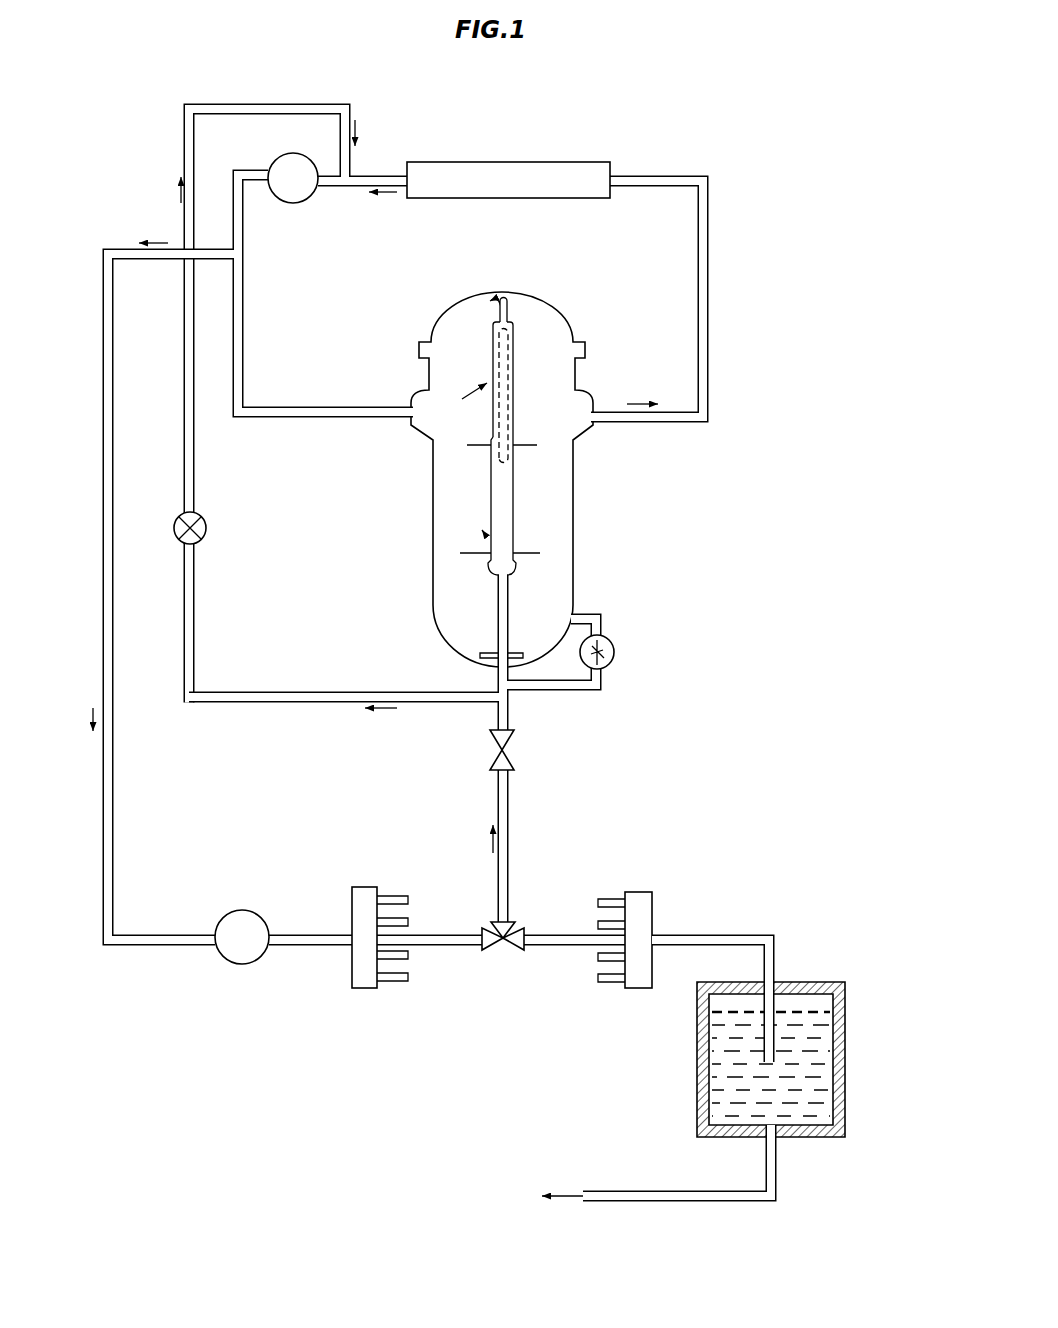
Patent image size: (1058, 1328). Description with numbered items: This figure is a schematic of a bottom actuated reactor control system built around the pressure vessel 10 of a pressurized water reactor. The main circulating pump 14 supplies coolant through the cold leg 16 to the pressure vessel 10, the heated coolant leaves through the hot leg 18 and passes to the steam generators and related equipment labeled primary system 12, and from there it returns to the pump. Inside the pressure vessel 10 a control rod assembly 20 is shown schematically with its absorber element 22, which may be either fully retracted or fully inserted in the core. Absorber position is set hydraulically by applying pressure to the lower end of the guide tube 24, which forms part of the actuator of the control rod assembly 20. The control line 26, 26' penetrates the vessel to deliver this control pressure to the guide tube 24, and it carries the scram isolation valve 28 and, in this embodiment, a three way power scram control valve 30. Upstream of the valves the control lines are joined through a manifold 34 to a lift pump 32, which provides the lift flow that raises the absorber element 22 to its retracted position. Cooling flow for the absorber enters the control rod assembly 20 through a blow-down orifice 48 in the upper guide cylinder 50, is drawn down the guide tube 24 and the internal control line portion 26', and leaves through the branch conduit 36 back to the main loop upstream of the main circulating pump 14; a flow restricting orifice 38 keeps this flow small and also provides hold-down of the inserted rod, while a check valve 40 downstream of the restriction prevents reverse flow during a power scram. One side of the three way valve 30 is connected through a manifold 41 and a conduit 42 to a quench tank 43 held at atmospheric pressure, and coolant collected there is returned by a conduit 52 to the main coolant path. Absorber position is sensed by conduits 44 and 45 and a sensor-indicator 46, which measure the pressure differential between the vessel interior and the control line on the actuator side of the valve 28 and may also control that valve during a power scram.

The pressure vessel 10 is at (577, 515).
The primary system 12 is at (548, 157).
The main circulating pump 14 is at (290, 204).
The cold leg 16 is at (290, 410).
The hot leg 18 is at (708, 293).
The control rod assembly 20 is at (460, 400).
The absorber element 22 is at (503, 381).
The guide tube 24 is at (513, 500).
The control line 26 is at (523, 846).
The internal control line portion 26' is at (530, 652).
The scram isolation valve 28 is at (511, 752).
The three way power scram control valve 30 is at (503, 950).
The lift pump 32 is at (234, 913).
The manifold 34 is at (350, 900).
The branch conduit 36 is at (194, 597).
The flow restricting orifice 38 is at (297, 703).
The check valve 40 is at (206, 521).
The manifold 41 is at (638, 908).
The conduit 42 is at (747, 938).
The quench tank 43 is at (697, 1052).
The conduit 44 is at (587, 691).
The conduit 45 is at (600, 623).
The sensor-indicator 46 is at (614, 650).
The blow-down orifice 48 is at (507, 302).
The upper guide cylinder 50 is at (493, 352).
The conduit 52 is at (648, 1192).